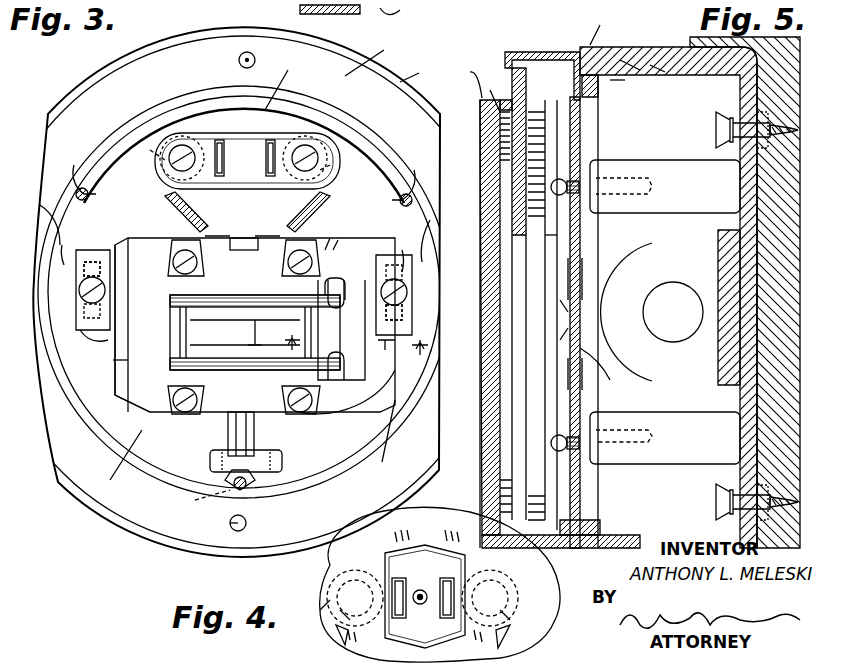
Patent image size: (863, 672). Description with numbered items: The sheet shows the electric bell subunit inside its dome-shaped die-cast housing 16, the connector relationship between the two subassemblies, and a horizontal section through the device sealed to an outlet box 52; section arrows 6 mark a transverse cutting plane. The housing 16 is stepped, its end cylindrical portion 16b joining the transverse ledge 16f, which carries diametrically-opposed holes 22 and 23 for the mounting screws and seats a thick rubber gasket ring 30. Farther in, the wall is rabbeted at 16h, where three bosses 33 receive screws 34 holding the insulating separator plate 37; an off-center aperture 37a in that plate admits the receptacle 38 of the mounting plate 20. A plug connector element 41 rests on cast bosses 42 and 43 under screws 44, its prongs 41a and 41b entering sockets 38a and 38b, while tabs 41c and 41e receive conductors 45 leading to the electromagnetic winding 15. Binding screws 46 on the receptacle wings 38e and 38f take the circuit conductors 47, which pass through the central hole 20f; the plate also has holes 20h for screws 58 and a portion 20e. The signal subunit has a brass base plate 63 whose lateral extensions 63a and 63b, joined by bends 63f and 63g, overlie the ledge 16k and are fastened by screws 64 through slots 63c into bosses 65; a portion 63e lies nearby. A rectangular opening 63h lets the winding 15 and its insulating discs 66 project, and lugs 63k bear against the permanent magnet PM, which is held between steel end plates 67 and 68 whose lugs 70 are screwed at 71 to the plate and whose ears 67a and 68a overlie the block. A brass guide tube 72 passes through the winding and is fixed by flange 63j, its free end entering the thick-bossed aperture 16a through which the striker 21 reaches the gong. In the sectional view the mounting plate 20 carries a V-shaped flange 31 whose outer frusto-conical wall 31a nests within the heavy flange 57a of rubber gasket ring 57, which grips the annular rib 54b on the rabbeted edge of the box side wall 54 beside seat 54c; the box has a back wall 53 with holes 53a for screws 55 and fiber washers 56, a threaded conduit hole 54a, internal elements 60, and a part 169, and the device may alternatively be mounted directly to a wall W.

In FIG. 3, the section line 6 is at (356, 336).
In FIG. 3, the electromagnetic winding 15 is at (222, 339).
In FIG. 3, the housing 16 is at (78, 508).
In FIG. 5, the housing 16 is at (482, 100).
In FIG. 3, the aperture 16a is at (276, 452).
In FIG. 3, the cylindrical wall portion 16b is at (426, 69).
In FIG. 5, the cylindrical wall portion 16b is at (565, 56).
In FIG. 3, the annular wall portion 16f is at (379, 55).
In FIG. 5, the annular wall portion 16f is at (474, 75).
In FIG. 3, the internal step or rabbet 16h is at (362, 137).
In FIG. 3, the lateral wall portion 16k is at (253, 444).
In FIG. 5, the mounting plate 20 is at (582, 140).
In FIG. 5, the plate boss 20e is at (568, 345).
In FIG. 5, the central round hole 20f is at (612, 382).
In FIG. 5, the holes 20h is at (557, 218).
In FIG. 3, the gong striker 21 is at (195, 500).
In FIG. 3, the hole 22 is at (239, 60).
In FIG. 3, the hole 23 is at (230, 523).
In FIG. 5, the gasket ring 30 is at (535, 100).
In FIG. 3, the annular flange 31 is at (320, 18).
In FIG. 5, the outer frusto-conical part 31a is at (540, 65).
In FIG. 3, the bosses 33 is at (92, 194).
In FIG. 3, the screws 34 is at (80, 188).
In FIG. 4, the insulating separator plate 37 is at (430, 522).
In FIG. 5, the insulating separator plate 37 is at (490, 172).
In FIG. 4, the aperture 37a is at (365, 540).
In FIG. 4, the receptacle 38 is at (438, 575).
In FIG. 4, the socket 38a is at (505, 615).
In FIG. 4, the socket 38b is at (350, 612).
In FIG. 4, the wing-like lateral extension 38e is at (515, 590).
In FIG. 4, the wing-like lateral extension 38f is at (330, 600).
In FIG. 3, the plug connector element 41 is at (250, 167).
In FIG. 3, the contact prong 41a is at (218, 178).
In FIG. 3, the contact prong 41b is at (270, 178).
In FIG. 3, the metal tab 41c is at (178, 206).
In FIG. 3, the metal tab 41e is at (318, 206).
In FIG. 3, the boss 42 is at (150, 150).
In FIG. 3, the boss 43 is at (330, 165).
In FIG. 3, the screws 44 is at (180, 150).
In FIG. 3, the conductors 45 is at (170, 236).
In FIG. 4, the binding screws 46 is at (392, 598).
In FIG. 4, the circuit conductors 47 is at (340, 640).
In FIG. 5, the outlet box 52 is at (768, 210).
In FIG. 5, the back wall 53 is at (762, 382).
In FIG. 5, the holes 53a is at (760, 105).
In FIG. 5, the cylindrical side wall 54 is at (710, 70).
In FIG. 5, the threaded hole 54a is at (672, 282).
In FIG. 5, the annular rib 54b is at (625, 80).
In FIG. 5, the annular seat 54c is at (620, 65).
In FIG. 5, the securing screws 55 is at (770, 125).
In FIG. 5, the sealing washers 56 is at (716, 123).
In FIG. 5, the sealing washer 57 is at (592, 92).
In FIG. 5, the flange portion 57a is at (602, 26).
In FIG. 5, the screws 58 is at (552, 187).
In FIG. 5, the permanent magnet 60 is at (660, 166).
In FIG. 3, the base plate 63 is at (255, 325).
In FIG. 3, the lateral extension 63a is at (108, 342).
In FIG. 3, the lateral extension 63b is at (392, 354).
In FIG. 3, the slot 63c is at (50, 225).
In FIG. 3, the frame lug 63e is at (432, 225).
In FIG. 3, the right-angled bend 63f is at (103, 285).
In FIG. 3, the right-angled bend 63g is at (412, 310).
In FIG. 3, the rectangular opening 63h is at (130, 370).
In FIG. 3, the bent-up flange 63j is at (243, 256).
In FIG. 3, the upstanding lug 63k is at (260, 351).
In FIG. 3, the screws 64 is at (105, 292).
In FIG. 3, the bosses 65 is at (88, 244).
In FIG. 3, the insulating end plates 66 is at (255, 332).
In FIG. 3, the end plate 67 is at (330, 250).
In FIG. 3, the bent-over lug 67a is at (348, 285).
In FIG. 3, the end plate 68 is at (140, 390).
In FIG. 3, the bent-over lug 68a is at (400, 395).
In FIG. 3, the right-angled lugs 70 is at (198, 262).
In FIG. 3, the screws 71 is at (175, 258).
In FIG. 3, the guide tube 72 is at (241, 432).
In FIG. 3, the ring 169 is at (293, 82).
In FIG. 3, the permanent magnet PM is at (341, 330).
In FIG. 3, the wall W is at (401, 21).